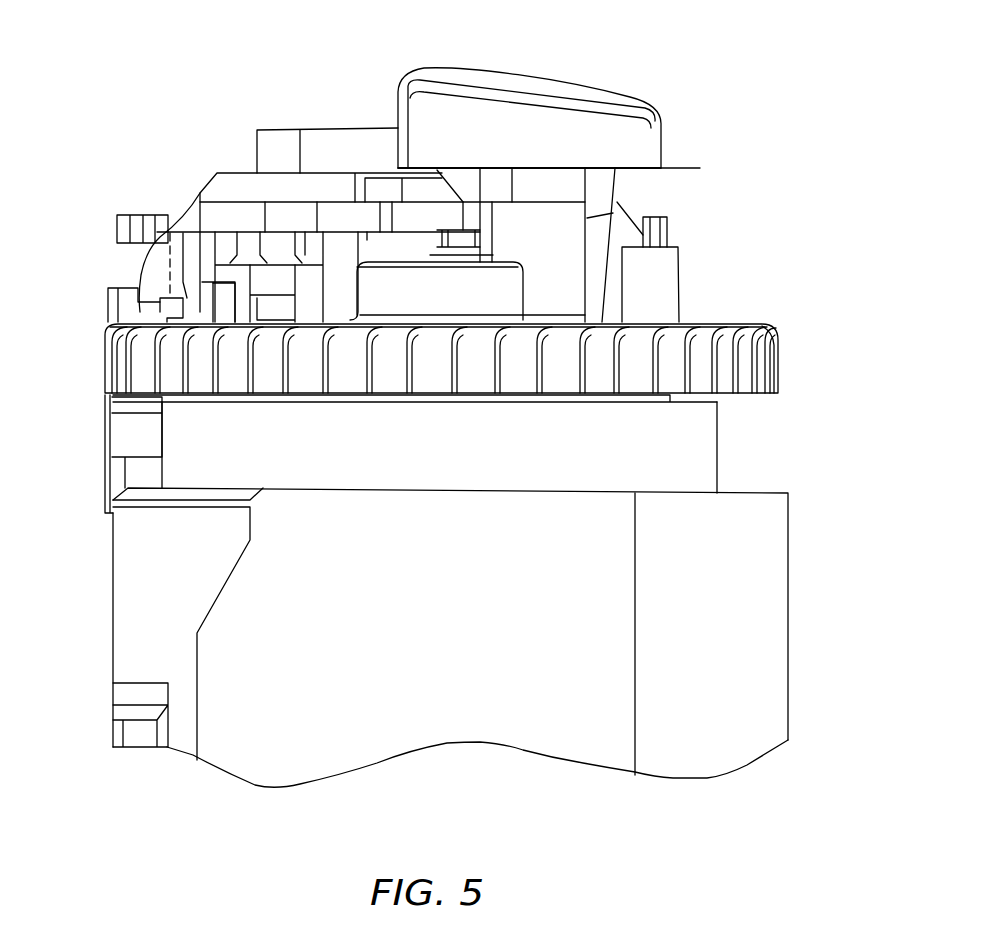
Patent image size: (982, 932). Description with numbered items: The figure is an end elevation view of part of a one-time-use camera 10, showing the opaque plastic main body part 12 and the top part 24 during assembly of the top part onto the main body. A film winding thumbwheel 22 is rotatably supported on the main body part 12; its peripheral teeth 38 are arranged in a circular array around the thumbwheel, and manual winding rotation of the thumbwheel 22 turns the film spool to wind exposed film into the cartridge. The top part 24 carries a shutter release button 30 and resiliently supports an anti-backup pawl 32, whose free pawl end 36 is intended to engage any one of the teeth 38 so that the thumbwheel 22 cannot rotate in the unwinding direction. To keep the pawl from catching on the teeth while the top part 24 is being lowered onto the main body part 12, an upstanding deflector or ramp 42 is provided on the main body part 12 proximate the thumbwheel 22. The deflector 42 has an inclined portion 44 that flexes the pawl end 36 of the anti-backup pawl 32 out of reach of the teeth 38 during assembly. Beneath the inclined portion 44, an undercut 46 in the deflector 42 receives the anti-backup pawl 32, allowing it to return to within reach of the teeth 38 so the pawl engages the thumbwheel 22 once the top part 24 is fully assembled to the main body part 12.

The one-time-use camera 10 is at (131, 112).
The main body part 12 is at (790, 561).
The film winding thumbwheel 22 is at (758, 328).
The top part 24 is at (253, 167).
The shutter release button 30 is at (536, 83).
The anti-backup pawl 32 is at (152, 262).
The free pawl end 36 is at (182, 260).
The peripheral teeth 38 is at (780, 362).
The deflector 42 is at (218, 300).
The inclined portion 44 is at (172, 296).
The undercut 46 is at (172, 316).